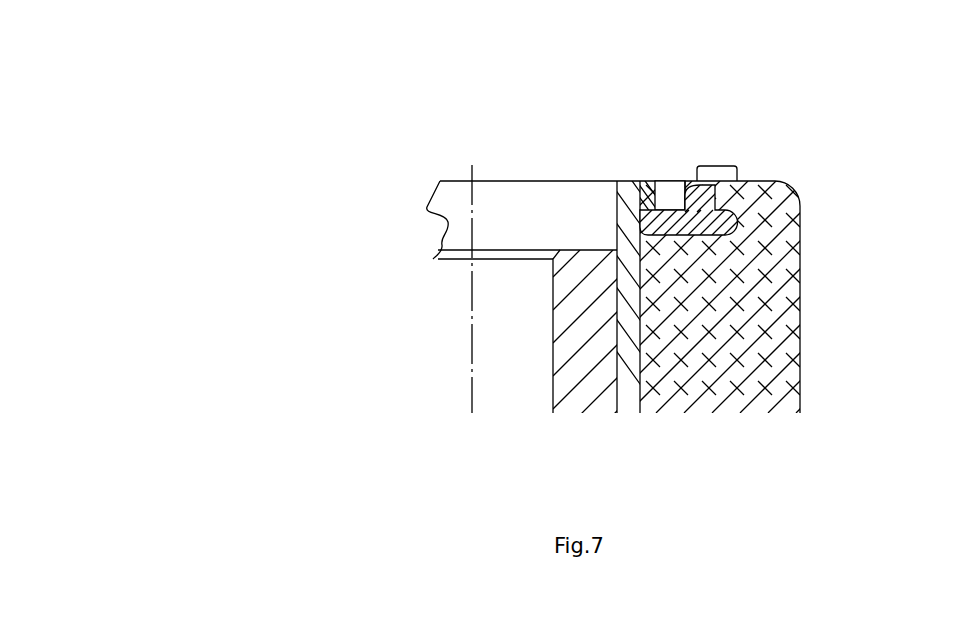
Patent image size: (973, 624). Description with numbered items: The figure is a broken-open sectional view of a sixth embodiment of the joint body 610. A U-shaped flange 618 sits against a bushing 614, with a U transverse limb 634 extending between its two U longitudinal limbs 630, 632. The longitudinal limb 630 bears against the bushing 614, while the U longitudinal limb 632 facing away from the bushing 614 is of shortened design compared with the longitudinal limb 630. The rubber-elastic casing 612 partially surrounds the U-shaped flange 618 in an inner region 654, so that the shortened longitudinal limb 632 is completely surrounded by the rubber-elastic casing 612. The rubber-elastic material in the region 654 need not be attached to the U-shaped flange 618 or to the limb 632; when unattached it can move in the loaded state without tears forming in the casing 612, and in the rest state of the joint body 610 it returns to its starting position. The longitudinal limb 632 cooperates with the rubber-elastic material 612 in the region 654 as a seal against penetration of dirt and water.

The joint body 610 is at (320, 140).
The rubber-elastic casing 612 is at (788, 283).
The bushing 614 is at (590, 258).
The U-shaped flange 618 is at (748, 164).
The longitudinal limb 630 is at (643, 200).
The U longitudinal limb 632 is at (788, 183).
The U transverse limb 634 is at (684, 200).
The inner region 654 is at (713, 166).